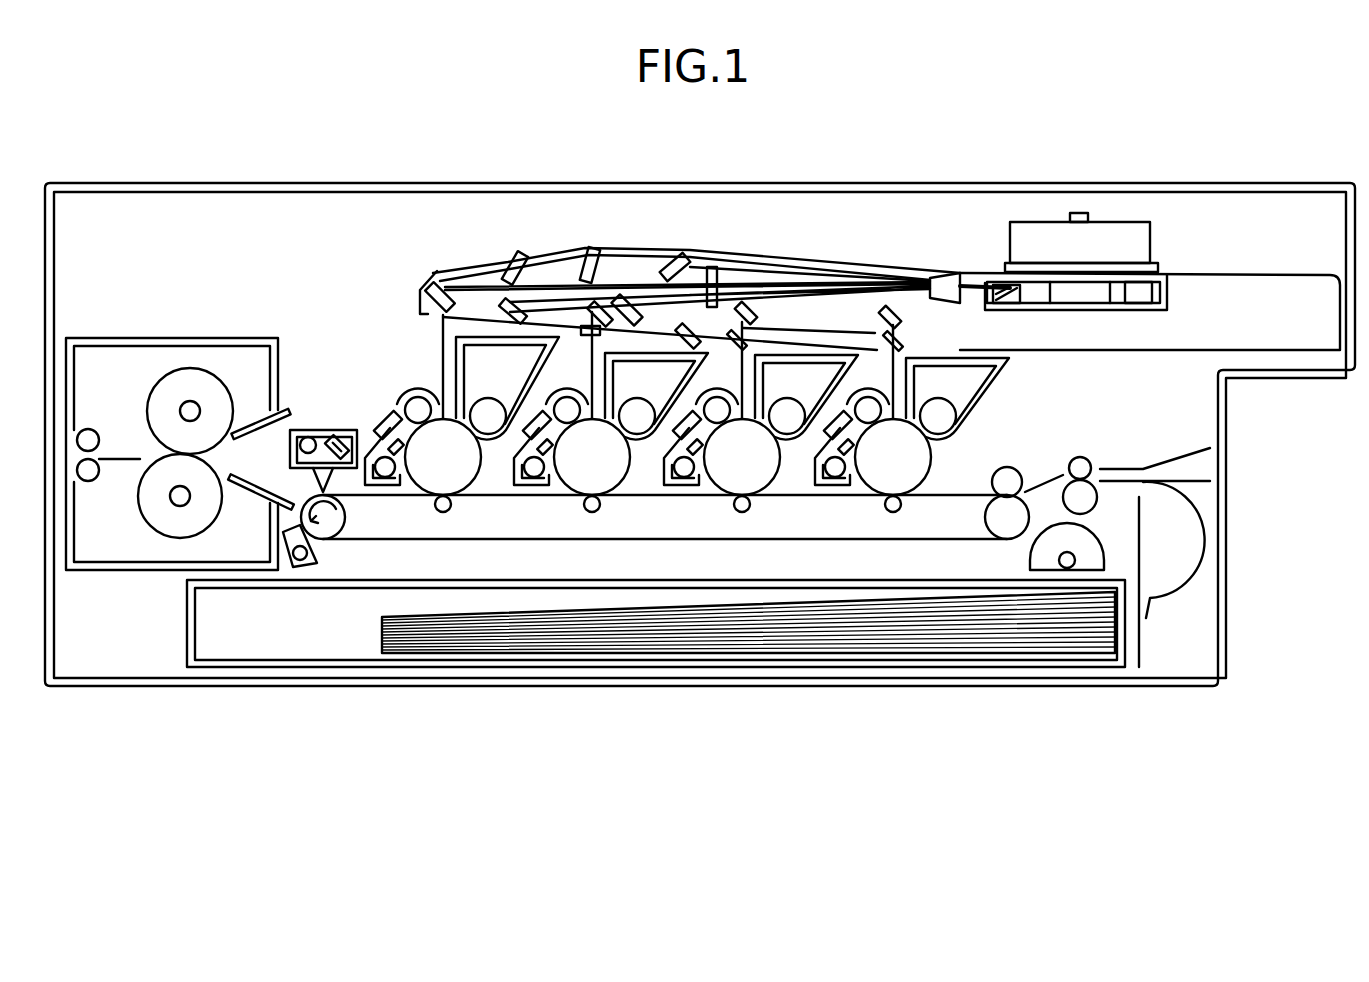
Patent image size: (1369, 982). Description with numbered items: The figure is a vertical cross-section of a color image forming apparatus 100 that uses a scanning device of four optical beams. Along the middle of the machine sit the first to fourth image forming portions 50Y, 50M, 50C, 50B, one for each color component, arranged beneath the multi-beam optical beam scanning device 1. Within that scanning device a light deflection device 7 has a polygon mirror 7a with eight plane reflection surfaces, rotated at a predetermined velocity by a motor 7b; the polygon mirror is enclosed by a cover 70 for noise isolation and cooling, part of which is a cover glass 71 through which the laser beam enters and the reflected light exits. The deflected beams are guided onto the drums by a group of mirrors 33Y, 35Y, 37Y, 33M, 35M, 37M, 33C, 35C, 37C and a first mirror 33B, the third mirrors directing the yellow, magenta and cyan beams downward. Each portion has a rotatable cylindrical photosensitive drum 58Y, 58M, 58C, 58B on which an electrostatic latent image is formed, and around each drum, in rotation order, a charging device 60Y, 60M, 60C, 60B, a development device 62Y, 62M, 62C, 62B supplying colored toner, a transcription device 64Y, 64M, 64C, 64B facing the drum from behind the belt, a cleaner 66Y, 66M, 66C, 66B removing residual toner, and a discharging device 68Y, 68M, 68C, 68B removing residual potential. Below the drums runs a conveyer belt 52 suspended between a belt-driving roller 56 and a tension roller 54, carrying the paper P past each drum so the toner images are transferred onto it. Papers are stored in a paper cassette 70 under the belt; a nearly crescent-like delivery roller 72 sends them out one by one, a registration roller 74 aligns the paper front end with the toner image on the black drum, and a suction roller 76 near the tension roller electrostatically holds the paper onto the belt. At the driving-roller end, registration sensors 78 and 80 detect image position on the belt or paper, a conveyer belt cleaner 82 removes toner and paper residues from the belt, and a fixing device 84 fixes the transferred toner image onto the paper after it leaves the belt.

The image forming apparatus 100 is at (1136, 183).
The optical beam scanning device 1 is at (1012, 352).
The light deflection device 7 is at (1242, 257).
The polygon mirror 7a is at (1158, 303).
The motor 7b is at (1152, 252).
The paper cassette 70 is at (1083, 648).
The cover glass 71 is at (990, 309).
The paper P is at (975, 645).
The fixing device 84 is at (123, 547).
The conveyer belt cleaner 82 is at (290, 570).
The registration sensor 80 is at (329, 420).
The registration sensor 78 is at (321, 430).
The conveyer belt 52 is at (948, 495).
The tension roller 54 is at (1000, 530).
The belt-driving roller 56 is at (336, 534).
The delivery roller 72 is at (1088, 535).
The registration roller 74 is at (1082, 457).
The suction roller 76 is at (1014, 470).
The image forming portion 50B is at (474, 380).
The image forming portion 50C is at (616, 393).
The image forming portion 50M is at (770, 393).
The image forming portion 50Y is at (921, 395).
The photosensitive drum 58B is at (455, 478).
The photosensitive drum 58C is at (600, 478).
The photosensitive drum 58M is at (755, 470).
The photosensitive drum 58Y is at (910, 470).
The charging device 60B is at (418, 397).
The charging device 60C is at (565, 398).
The charging device 60M is at (717, 397).
The charging device 60Y is at (868, 397).
The development device 62B is at (489, 430).
The development device 62C is at (640, 432).
The development device 62M is at (792, 432).
The development device 62Y is at (958, 418).
The transcription device 64B is at (438, 512).
The transcription device 64C is at (590, 512).
The transcription device 64M is at (750, 512).
The transcription device 64Y is at (900, 512).
The cleaner 66B is at (402, 478).
The cleaner 66C is at (540, 478).
The cleaner 66M is at (690, 478).
The cleaner 66Y is at (838, 478).
The discharging device 68B is at (386, 423).
The discharging device 68C is at (535, 440).
The discharging device 68M is at (685, 440).
The discharging device 68Y is at (842, 415).
The first mirror 33B is at (428, 290).
The mirror 33C is at (508, 300).
The mirror 33M is at (583, 262).
The mirror 33Y is at (692, 256).
The mirror 35C is at (505, 262).
The mirror 35M is at (628, 300).
The mirror 35Y is at (676, 260).
The third mirror 37C is at (600, 304).
The third mirror 37M is at (757, 316).
The third mirror 37Y is at (900, 322).